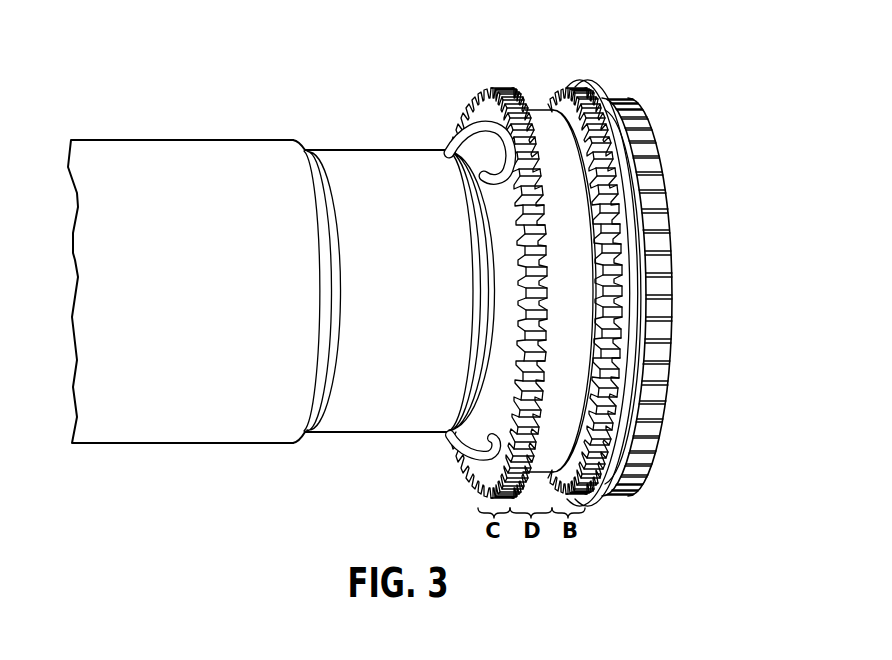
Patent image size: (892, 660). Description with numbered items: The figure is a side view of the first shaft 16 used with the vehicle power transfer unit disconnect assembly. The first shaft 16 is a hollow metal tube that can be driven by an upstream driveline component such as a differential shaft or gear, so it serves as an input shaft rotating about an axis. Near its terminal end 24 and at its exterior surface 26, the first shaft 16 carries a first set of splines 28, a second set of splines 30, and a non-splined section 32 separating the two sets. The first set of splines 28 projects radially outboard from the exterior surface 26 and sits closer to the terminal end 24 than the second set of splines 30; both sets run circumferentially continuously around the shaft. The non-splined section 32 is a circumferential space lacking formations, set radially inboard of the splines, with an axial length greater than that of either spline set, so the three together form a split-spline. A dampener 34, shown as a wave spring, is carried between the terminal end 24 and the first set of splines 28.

The first shaft 16 is at (175, 134).
The terminal end 24 is at (672, 255).
The exterior surface 26 is at (370, 177).
The first set of splines 28 is at (585, 112).
The second set of splines 30 is at (504, 107).
The non-splined section 32 is at (543, 130).
The dampener 34 is at (612, 116).